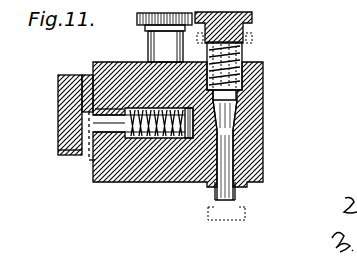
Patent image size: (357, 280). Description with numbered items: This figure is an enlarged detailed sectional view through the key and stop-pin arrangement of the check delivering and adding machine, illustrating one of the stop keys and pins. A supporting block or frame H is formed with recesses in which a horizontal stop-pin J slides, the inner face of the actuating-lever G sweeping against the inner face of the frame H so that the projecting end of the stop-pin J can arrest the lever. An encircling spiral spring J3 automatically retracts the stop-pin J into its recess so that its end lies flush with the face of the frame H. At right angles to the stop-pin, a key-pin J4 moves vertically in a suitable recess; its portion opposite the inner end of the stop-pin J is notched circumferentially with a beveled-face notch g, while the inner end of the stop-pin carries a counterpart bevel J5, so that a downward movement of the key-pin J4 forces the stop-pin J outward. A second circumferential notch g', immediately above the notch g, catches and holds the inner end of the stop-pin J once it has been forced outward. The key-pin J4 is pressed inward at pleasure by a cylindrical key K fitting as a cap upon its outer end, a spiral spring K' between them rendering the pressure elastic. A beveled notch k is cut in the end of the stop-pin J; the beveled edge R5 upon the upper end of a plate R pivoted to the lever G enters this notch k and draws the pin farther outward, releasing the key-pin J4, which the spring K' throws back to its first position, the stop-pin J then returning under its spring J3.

The supporting block or frame H is at (178, 133).
The actuating-lever G is at (62, 115).
The plate R is at (63, 50).
The beveled edge R5 is at (60, 135).
The stop-pin J is at (127, 60).
The beveled notch k is at (113, 103).
The spiral spring J3 is at (148, 108).
The counterpart bevel J5 is at (189, 108).
The cylindrical key K is at (194, 31).
The spiral spring K' is at (243, 66).
The key-pin J4 is at (243, 95).
The second circumferential notch g' is at (249, 115).
The beveled-face notch g is at (247, 173).